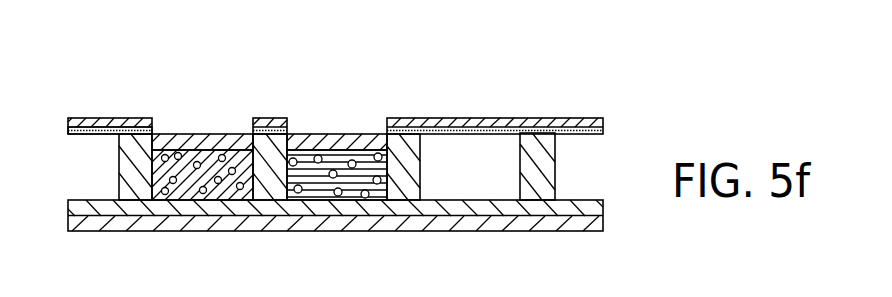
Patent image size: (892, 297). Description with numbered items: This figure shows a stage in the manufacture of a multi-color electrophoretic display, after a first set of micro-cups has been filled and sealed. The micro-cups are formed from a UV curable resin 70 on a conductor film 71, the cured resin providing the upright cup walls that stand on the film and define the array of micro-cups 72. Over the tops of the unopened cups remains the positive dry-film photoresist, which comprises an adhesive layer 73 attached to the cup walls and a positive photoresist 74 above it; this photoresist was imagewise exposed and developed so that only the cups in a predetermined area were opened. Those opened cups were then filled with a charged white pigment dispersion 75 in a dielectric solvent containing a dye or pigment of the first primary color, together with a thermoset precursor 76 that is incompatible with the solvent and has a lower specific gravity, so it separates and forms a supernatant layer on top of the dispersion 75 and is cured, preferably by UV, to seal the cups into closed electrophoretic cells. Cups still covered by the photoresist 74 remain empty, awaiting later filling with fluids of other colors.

The UV curable resin 70 is at (545, 167).
The conductor film 71 is at (530, 223).
The array of micro-cups 72 is at (462, 138).
The adhesive layer 73 is at (82, 135).
The positive photoresist 74 is at (83, 118).
The charged white pigment dispersion 75 is at (181, 193).
The thermoset precursor 76 is at (192, 138).